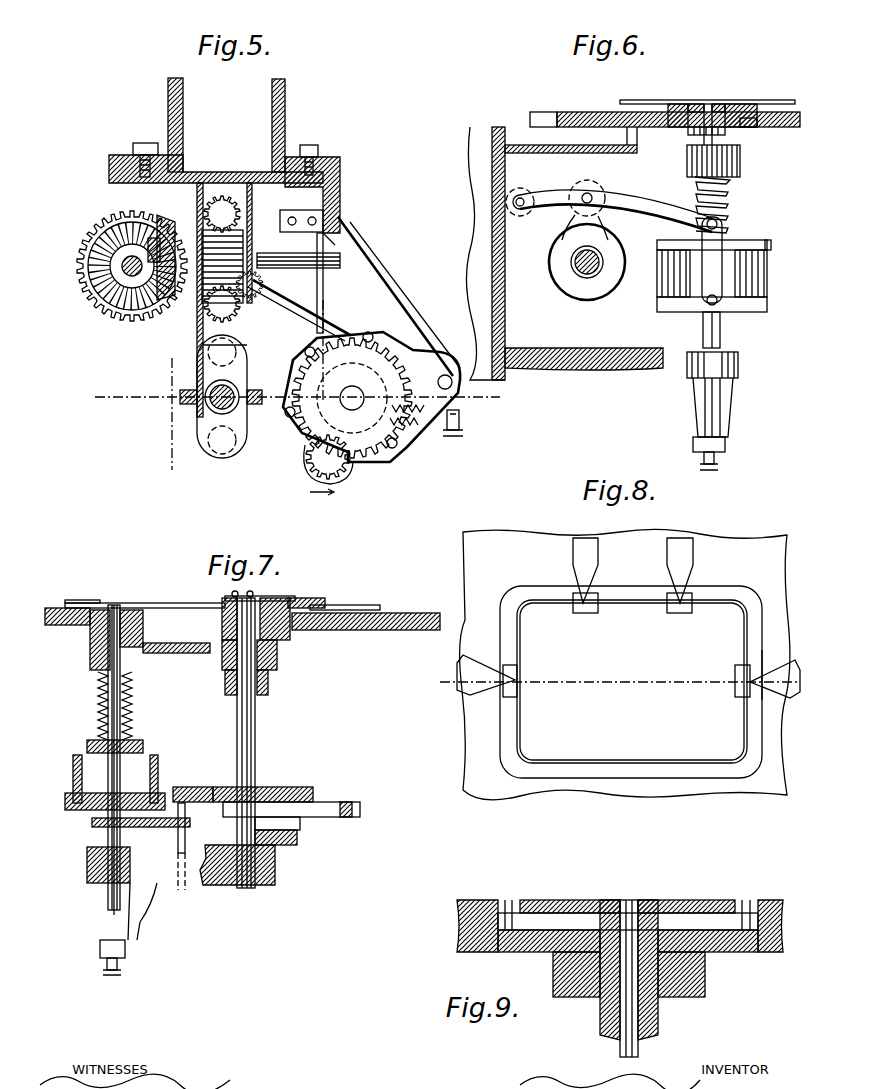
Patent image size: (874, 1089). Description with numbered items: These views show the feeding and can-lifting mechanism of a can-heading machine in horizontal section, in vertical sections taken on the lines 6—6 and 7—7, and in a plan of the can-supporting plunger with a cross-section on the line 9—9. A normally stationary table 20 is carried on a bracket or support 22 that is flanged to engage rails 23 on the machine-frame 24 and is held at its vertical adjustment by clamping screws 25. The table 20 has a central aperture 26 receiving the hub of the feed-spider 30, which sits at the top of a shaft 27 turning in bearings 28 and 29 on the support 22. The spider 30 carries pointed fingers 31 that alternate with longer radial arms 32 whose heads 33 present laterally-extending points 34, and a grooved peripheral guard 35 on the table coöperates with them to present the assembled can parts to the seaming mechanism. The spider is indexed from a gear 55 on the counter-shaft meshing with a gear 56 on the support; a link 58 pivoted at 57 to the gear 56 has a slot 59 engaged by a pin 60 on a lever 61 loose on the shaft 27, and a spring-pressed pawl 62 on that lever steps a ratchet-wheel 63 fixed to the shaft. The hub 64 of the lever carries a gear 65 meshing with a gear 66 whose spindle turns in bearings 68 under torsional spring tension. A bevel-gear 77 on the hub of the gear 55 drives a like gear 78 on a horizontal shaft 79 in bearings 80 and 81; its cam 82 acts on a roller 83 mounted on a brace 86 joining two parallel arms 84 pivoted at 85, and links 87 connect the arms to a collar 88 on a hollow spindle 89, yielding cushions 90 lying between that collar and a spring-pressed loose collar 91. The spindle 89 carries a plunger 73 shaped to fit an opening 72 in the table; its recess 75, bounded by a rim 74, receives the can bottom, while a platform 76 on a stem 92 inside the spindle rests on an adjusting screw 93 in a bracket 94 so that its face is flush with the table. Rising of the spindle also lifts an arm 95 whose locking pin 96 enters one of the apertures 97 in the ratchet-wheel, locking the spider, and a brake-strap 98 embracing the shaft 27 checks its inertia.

In FIG. 5, the section line 6 is at (437, 544).
In FIG. 5, the section line 7 is at (304, 394).
In FIG. 8, the section line 9 is at (621, 681).
In FIG. 6, the table 20 is at (580, 112).
In FIG. 7, the table 20 is at (362, 630).
In FIG. 8, the table 20 is at (625, 664).
In FIG. 9, the table 20 is at (470, 900).
In FIG. 5, the support 22 is at (205, 176).
In FIG. 6, the support 22 is at (505, 275).
In FIG. 5, the rails 23 is at (130, 157).
In FIG. 5, the machine-frame 24 is at (285, 96).
In FIG. 6, the machine-frame 24 is at (480, 247).
In FIG. 5, the clamping screw 25 is at (145, 143).
In FIG. 6, the central aperture 26 is at (752, 130).
In FIG. 7, the central aperture 26 is at (292, 632).
In FIG. 5, the shaft 27 is at (355, 406).
In FIG. 6, the shaft 27 is at (728, 147).
In FIG. 7, the shaft 27 is at (255, 723).
In FIG. 7, the bearing 28 is at (277, 666).
In FIG. 7, the bearing 29 is at (275, 881).
In FIG. 6, the feed-spider 30 is at (735, 104).
In FIG. 7, the feed-spider 30 is at (292, 598).
In FIG. 7, the pointed fingers 31 is at (172, 600).
In FIG. 8, the pointed fingers 31 is at (678, 566).
In FIG. 7, the arms 32 is at (160, 653).
In FIG. 7, the heads 33 is at (375, 605).
In FIG. 8, the heads 33 is at (480, 683).
In FIG. 8, the points 34 is at (518, 679).
In FIG. 7, the grooved peripheral guard 35 is at (78, 600).
In FIG. 5, the gear 55 is at (100, 300).
In FIG. 5, the gear 56 is at (222, 269).
In FIG. 5, the pivot 57 is at (120, 268).
In FIG. 5, the link 58 is at (299, 310).
In FIG. 5, the slot 59 is at (415, 338).
In FIG. 5, the pin 60 is at (455, 430).
In FIG. 5, the lever 61 is at (430, 360).
In FIG. 7, the lever 61 is at (330, 802).
In FIG. 5, the spring-pressed pawl 62 is at (408, 422).
In FIG. 5, the ratchet-wheel 63 is at (305, 437).
In FIG. 7, the ratchet-wheel 63 is at (290, 788).
In FIG. 7, the hub 64 is at (300, 824).
In FIG. 7, the gear 65 is at (297, 839).
In FIG. 5, the gear 66 is at (318, 470).
In FIG. 5, the bearings 68 is at (340, 482).
In FIG. 7, the opening 72 is at (88, 620).
In FIG. 8, the opening 72 is at (548, 778).
In FIG. 6, the plunger 73 is at (680, 125).
In FIG. 9, the plunger 73 is at (725, 952).
In FIG. 6, the rim 74 is at (670, 100).
In FIG. 8, the rim 74 is at (730, 778).
In FIG. 9, the rim 74 is at (752, 901).
In FIG. 8, the recess 75 is at (650, 763).
In FIG. 9, the recess 75 is at (668, 913).
In FIG. 6, the platform 76 is at (700, 104).
In FIG. 7, the platform 76 is at (112, 605).
In FIG. 8, the platform 76 is at (593, 711).
In FIG. 9, the platform 76 is at (560, 900).
In FIG. 5, the bevel-gear 77 is at (125, 305).
In FIG. 5, the bevel gear 78 is at (165, 300).
In FIG. 5, the horizontal shaft 79 is at (320, 250).
In FIG. 6, the horizontal shaft 79 is at (582, 274).
In FIG. 5, the bearing 80 is at (187, 327).
In FIG. 5, the bearing 81 is at (323, 258).
In FIG. 5, the cam 82 is at (258, 240).
In FIG. 6, the cam 82 is at (595, 292).
In FIG. 5, the roller 83 is at (228, 250).
In FIG. 6, the roller 83 is at (593, 194).
In FIG. 5, the arms 84 is at (202, 350).
In FIG. 6, the arms 84 is at (612, 210).
In FIG. 5, the pivot 85 is at (160, 250).
In FIG. 6, the pivot 85 is at (523, 198).
In FIG. 6, the brace 86 is at (583, 206).
In FIG. 5, the links 87 is at (188, 405).
In FIG. 6, the links 87 is at (722, 237).
In FIG. 7, the links 87 is at (73, 771).
In FIG. 6, the collar 88 is at (690, 312).
In FIG. 7, the collar 88 is at (80, 810).
In FIG. 5, the hollow spindle 89 is at (235, 405).
In FIG. 6, the hollow spindle 89 is at (720, 331).
In FIG. 7, the hollow spindle 89 is at (122, 762).
In FIG. 9, the hollow spindle 89 is at (658, 1016).
In FIG. 6, the yielding cushions 90 is at (660, 275).
In FIG. 5, the spring-pressed collar 91 is at (222, 458).
In FIG. 6, the spring-pressed collar 91 is at (770, 250).
In FIG. 7, the spring-pressed collar 91 is at (87, 746).
In FIG. 6, the stem 92 is at (715, 103).
In FIG. 7, the stem 92 is at (110, 919).
In FIG. 9, the stem 92 is at (620, 1049).
In FIG. 6, the adjusting screw 93 is at (725, 441).
In FIG. 7, the adjusting screw 93 is at (105, 946).
In FIG. 6, the bracket 94 is at (696, 416).
In FIG. 7, the bracket 94 is at (145, 923).
In FIG. 7, the arm 95 is at (142, 827).
In FIG. 7, the locking pin 96 is at (185, 811).
In FIG. 7, the apertures 97 is at (190, 788).
In FIG. 7, the brake-strap 98 is at (268, 691).